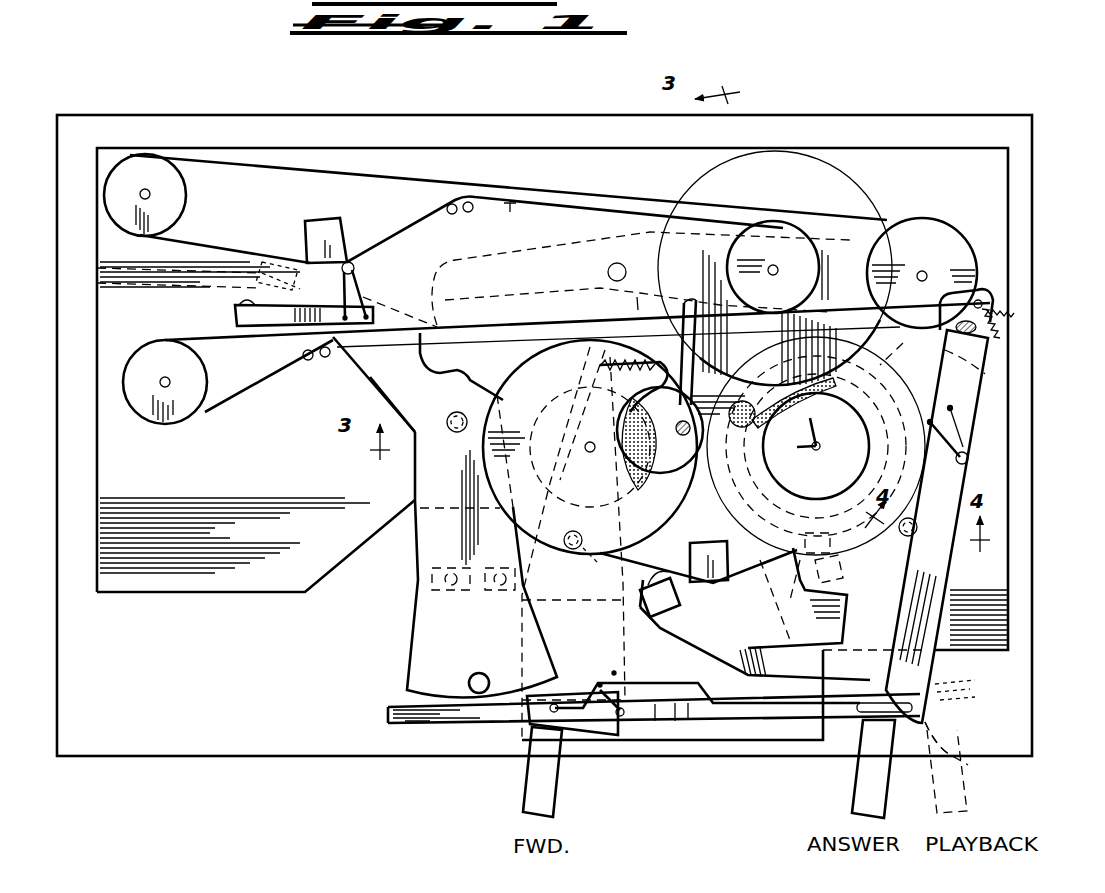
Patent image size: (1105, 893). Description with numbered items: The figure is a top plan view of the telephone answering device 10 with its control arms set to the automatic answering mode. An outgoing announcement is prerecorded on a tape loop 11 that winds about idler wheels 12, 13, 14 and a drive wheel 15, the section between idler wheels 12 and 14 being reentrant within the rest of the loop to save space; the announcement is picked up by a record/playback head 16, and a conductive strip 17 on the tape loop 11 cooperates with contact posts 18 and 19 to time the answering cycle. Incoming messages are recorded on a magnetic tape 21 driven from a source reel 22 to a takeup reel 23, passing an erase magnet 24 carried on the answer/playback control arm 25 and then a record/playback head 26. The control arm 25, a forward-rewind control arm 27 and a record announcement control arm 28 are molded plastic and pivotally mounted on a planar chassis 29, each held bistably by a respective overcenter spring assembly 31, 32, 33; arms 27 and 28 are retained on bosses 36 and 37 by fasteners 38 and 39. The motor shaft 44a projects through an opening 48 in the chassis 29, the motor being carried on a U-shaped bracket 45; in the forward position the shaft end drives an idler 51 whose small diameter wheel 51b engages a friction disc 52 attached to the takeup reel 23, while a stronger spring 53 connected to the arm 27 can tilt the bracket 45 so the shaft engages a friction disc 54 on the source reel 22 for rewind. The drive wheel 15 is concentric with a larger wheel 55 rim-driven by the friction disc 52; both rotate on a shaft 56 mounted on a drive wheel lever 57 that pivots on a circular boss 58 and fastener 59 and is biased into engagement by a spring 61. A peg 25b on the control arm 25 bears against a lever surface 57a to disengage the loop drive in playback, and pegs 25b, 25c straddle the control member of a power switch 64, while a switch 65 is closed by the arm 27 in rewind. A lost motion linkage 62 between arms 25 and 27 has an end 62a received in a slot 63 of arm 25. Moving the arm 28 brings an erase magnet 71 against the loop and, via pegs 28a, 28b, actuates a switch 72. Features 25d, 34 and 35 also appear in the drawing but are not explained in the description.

The telephone answering device 10 is at (878, 112).
The tape loop 11 is at (585, 190).
The idler wheel 12 is at (145, 195).
The idler wheel 13 is at (922, 273).
The idler wheel 14 is at (165, 382).
The drive wheel 15 is at (797, 237).
The record/playback head 16 is at (324, 222).
The conductive strip 17 is at (510, 222).
The contact post 18 is at (453, 214).
The contact post 19 is at (309, 360).
The magnetic tape 21 is at (718, 590).
The source reel 22 is at (590, 447).
The takeup reel 23 is at (816, 446).
The erase magnet 24 is at (663, 575).
The answer/playback control arm 25 is at (933, 526).
The peg 25b is at (990, 355).
The peg 25c is at (801, 621).
The lever edge 25d is at (807, 590).
The record/playback head 26 is at (708, 542).
The forward-rewind control arm 27 is at (573, 650).
The record announcement control arm 28 is at (482, 546).
The peg 28a is at (430, 578).
The peg 28b is at (492, 592).
The chassis 29 is at (552, 444).
The overcenter spring assembly 31 is at (972, 437).
The overcenter spring assembly 32 is at (614, 667).
The overcenter spring assembly 33 is at (370, 295).
The pin 34 is at (920, 520).
The pin 35 is at (840, 548).
The boss 36 is at (599, 572).
The boss 37 is at (455, 433).
The fastener 38 is at (573, 550).
The fastener 39 is at (452, 412).
The motor shaft 44a is at (590, 447).
The U-shaped bracket 45 is at (686, 300).
The opening 48 is at (670, 480).
The idler 51 is at (722, 432).
The small diameter wheel 51b is at (785, 422).
The friction disc 52 is at (888, 368).
The spring 53 is at (625, 299).
The friction disc 54 is at (622, 484).
The drive wheel 55 is at (861, 194).
The shaft 56 is at (768, 270).
The drive wheel lever 57 is at (605, 246).
The lever surface 57a is at (988, 380).
The circular boss 58 is at (608, 284).
The fastener 59 is at (608, 272).
The spring 61 is at (992, 318).
The lost motion linkage 62 is at (755, 720).
The linkage end 62a is at (955, 762).
The slot 63 is at (862, 715).
The switch 64 is at (845, 570).
The switch 65 is at (640, 740).
The erase magnet 71 is at (233, 300).
The switch 72 is at (472, 578).